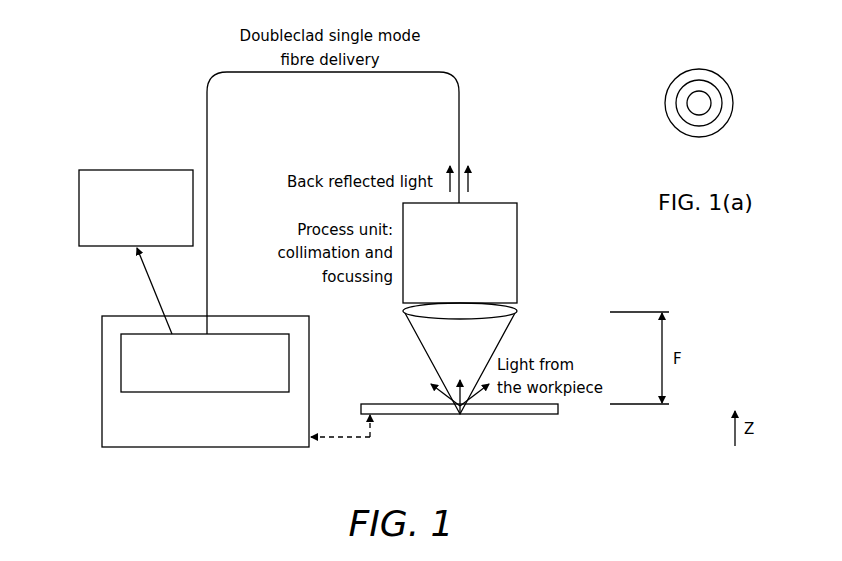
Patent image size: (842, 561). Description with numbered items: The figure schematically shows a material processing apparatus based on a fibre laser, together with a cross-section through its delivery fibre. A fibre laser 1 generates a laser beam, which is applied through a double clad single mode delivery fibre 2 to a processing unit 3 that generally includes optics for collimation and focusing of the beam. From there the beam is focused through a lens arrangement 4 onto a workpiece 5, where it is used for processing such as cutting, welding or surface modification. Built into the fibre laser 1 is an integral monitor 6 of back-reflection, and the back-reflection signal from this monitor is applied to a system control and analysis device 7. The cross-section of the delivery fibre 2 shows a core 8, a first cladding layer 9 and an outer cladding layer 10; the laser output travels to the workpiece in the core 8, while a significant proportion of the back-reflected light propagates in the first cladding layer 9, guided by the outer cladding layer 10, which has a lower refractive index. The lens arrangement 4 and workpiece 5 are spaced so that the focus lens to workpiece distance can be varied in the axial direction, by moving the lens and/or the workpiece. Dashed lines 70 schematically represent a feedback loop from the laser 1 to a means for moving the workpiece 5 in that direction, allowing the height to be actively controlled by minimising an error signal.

In FIG. 1, the fibre laser 1 is at (102, 435).
In FIG. 1, the double clad single mode delivery fibre 2 is at (333, 72).
In FIG. 1, the processing unit 3 is at (517, 210).
In FIG. 1, the lens arrangement 4 is at (517, 311).
In FIG. 1, the workpiece 5 is at (543, 414).
In FIG. 1, the integral monitor of back-reflection 6 is at (121, 347).
In FIG. 1, the system control and analysis device 7 is at (79, 178).
In FIG. 1A, the core 8 is at (699, 115).
In FIG. 1A, the first cladding layer 9 is at (722, 103).
In FIG. 1A, the outer cladding layer 10 is at (665, 103).
In FIG. 1, the dashed lines 70 is at (358, 444).